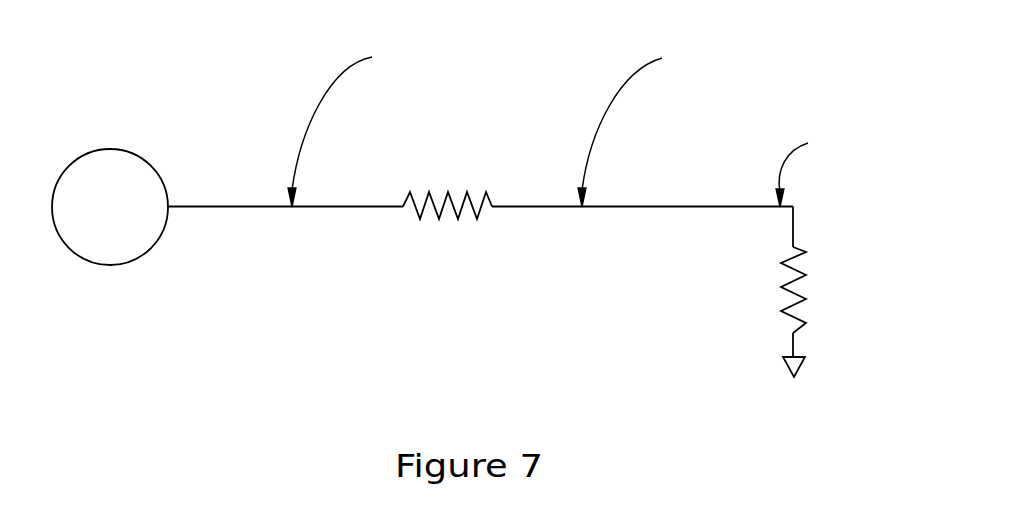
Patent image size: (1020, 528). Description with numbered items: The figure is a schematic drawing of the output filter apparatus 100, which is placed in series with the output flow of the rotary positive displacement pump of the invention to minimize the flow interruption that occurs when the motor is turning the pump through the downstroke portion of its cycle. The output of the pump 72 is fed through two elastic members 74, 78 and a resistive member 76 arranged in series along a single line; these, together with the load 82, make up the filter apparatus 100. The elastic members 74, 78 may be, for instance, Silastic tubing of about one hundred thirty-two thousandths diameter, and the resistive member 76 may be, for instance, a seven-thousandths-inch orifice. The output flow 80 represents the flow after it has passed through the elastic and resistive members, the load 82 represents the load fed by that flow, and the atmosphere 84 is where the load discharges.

The output filter apparatus 100 is at (210, 63).
The pump 72 is at (97, 150).
The elastic member 74 is at (249, 205).
The resistive member 76 is at (447, 197).
The elastic member 78 is at (538, 205).
The output flow 80 is at (871, 247).
The load 82 is at (783, 290).
The atmosphere 84 is at (787, 372).